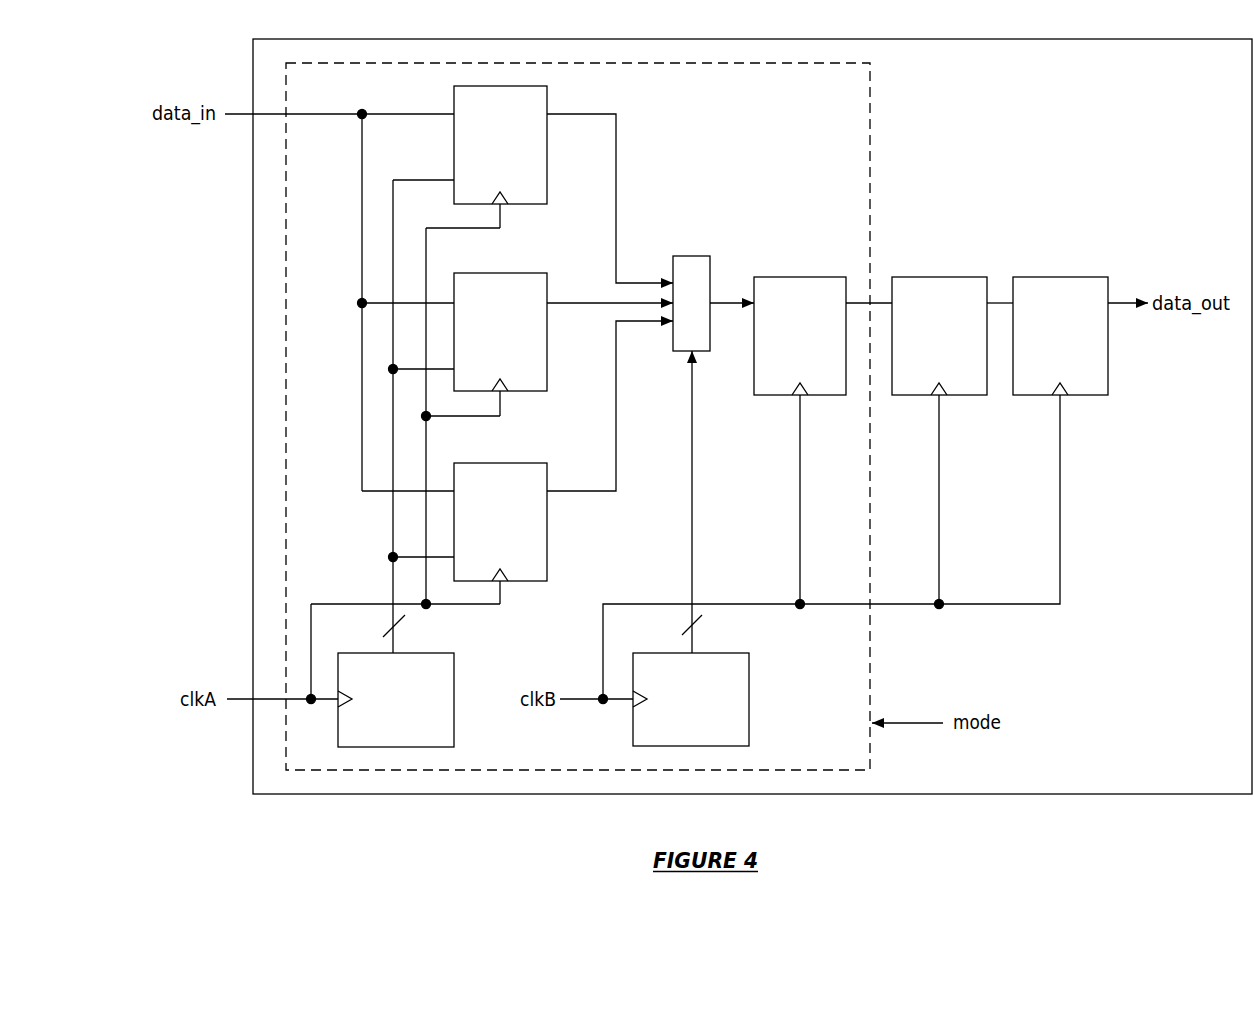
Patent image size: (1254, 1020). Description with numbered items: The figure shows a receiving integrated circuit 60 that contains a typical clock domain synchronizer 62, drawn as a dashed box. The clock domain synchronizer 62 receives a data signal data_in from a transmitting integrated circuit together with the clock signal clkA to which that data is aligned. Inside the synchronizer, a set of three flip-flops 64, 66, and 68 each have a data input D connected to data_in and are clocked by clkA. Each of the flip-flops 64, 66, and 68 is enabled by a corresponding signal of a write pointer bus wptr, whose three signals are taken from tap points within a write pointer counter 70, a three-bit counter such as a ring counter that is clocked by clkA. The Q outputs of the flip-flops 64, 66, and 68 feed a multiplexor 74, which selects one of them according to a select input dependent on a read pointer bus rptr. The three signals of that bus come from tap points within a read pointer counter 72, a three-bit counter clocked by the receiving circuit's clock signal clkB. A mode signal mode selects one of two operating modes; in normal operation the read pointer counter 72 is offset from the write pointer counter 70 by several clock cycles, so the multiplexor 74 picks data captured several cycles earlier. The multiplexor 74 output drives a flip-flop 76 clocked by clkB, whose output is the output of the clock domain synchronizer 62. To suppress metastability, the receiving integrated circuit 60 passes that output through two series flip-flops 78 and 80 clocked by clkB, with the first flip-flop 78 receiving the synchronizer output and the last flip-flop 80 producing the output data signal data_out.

The receiving integrated circuit 60 is at (965, 38).
The clock domain synchronizer 62 is at (872, 136).
The flip-flop 64 is at (547, 195).
The flip-flop 66 is at (547, 383).
The flip-flop 68 is at (547, 572).
The write pointer counter 70 is at (454, 660).
The read pointer counter 72 is at (749, 663).
The multiplexor 74 is at (682, 255).
The flip-flop 76 is at (787, 276).
The first flip-flop 78 is at (926, 276).
The last flip-flop 80 is at (1047, 276).